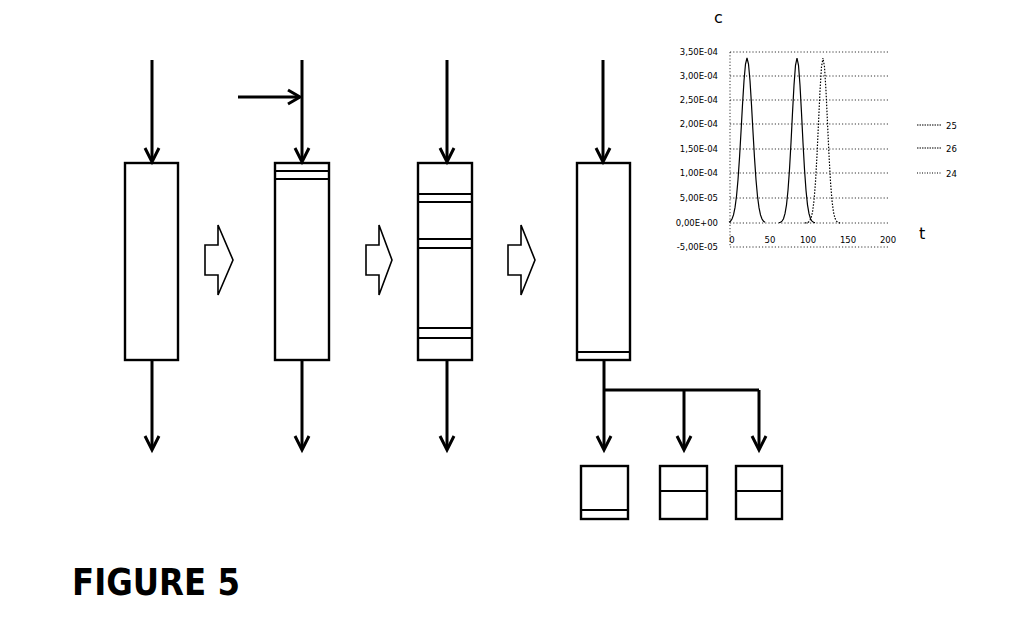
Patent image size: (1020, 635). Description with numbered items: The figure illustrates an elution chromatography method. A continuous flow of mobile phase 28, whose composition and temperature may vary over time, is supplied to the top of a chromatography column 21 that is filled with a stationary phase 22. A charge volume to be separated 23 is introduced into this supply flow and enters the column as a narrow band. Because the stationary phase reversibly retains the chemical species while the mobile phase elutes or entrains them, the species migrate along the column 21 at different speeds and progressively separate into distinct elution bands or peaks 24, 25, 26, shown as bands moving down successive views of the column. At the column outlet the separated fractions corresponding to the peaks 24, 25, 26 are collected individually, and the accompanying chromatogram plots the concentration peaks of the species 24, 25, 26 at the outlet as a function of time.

The chromatography column 21 is at (125, 190).
The stationary phase 22 is at (147, 260).
The charge volume to be separated 23 is at (330, 181).
The elution band 24 is at (472, 199).
The elution band 25 is at (472, 246).
The elution band 26 is at (472, 338).
The mobile phase 28 is at (150, 120).